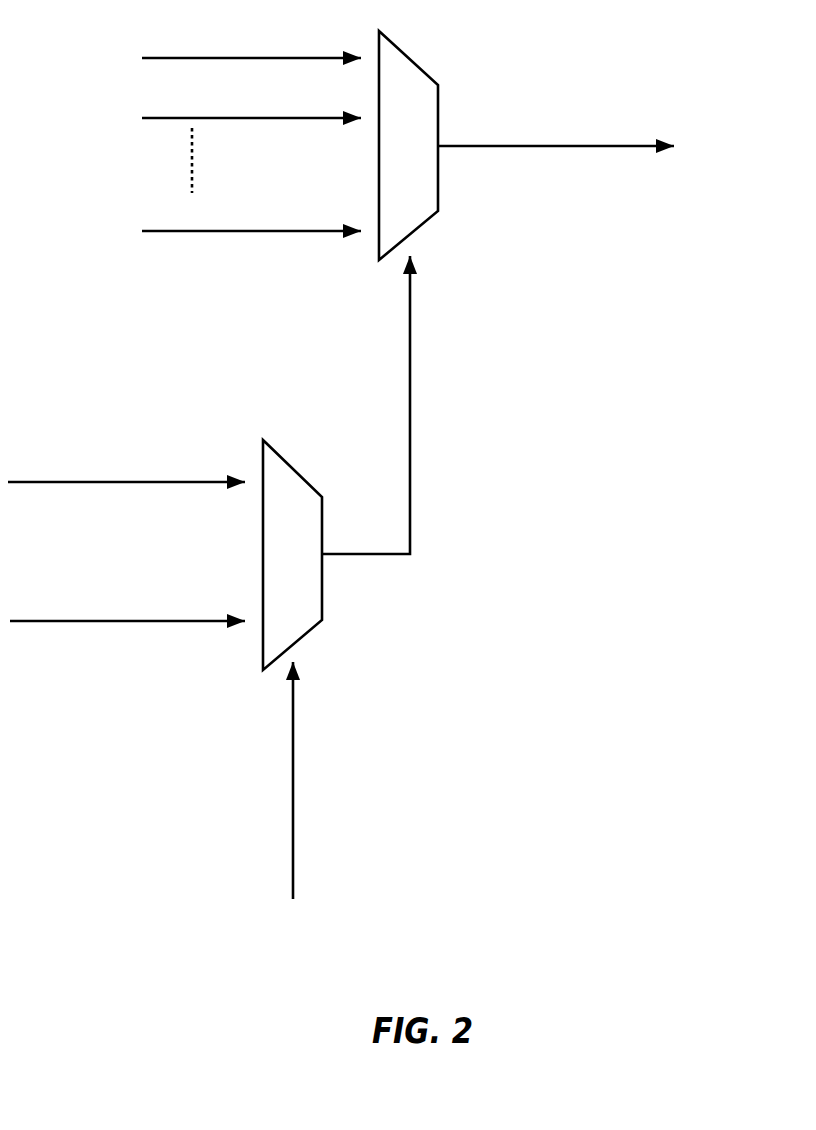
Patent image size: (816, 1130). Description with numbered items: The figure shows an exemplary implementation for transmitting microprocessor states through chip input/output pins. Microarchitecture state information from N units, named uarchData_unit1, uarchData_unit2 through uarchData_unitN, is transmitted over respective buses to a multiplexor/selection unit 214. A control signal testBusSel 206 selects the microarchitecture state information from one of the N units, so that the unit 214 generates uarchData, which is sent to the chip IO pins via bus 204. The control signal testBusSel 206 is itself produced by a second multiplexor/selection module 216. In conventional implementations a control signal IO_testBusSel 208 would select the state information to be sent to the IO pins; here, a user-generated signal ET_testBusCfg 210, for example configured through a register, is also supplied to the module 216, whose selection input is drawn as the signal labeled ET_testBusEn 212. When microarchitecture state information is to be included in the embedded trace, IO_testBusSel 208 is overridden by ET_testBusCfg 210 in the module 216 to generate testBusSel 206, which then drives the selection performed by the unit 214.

The bus 204 is at (578, 146).
The control signal testBusSel 206 is at (410, 393).
The control signal IO_testBusSel 208 is at (147, 482).
The ET_testBusCfg 210 is at (150, 621).
The ET_testBusEn select signal 212 is at (293, 773).
The multiplexor/selection unit 214 is at (411, 60).
The multiplexor/selection module 216 is at (298, 474).